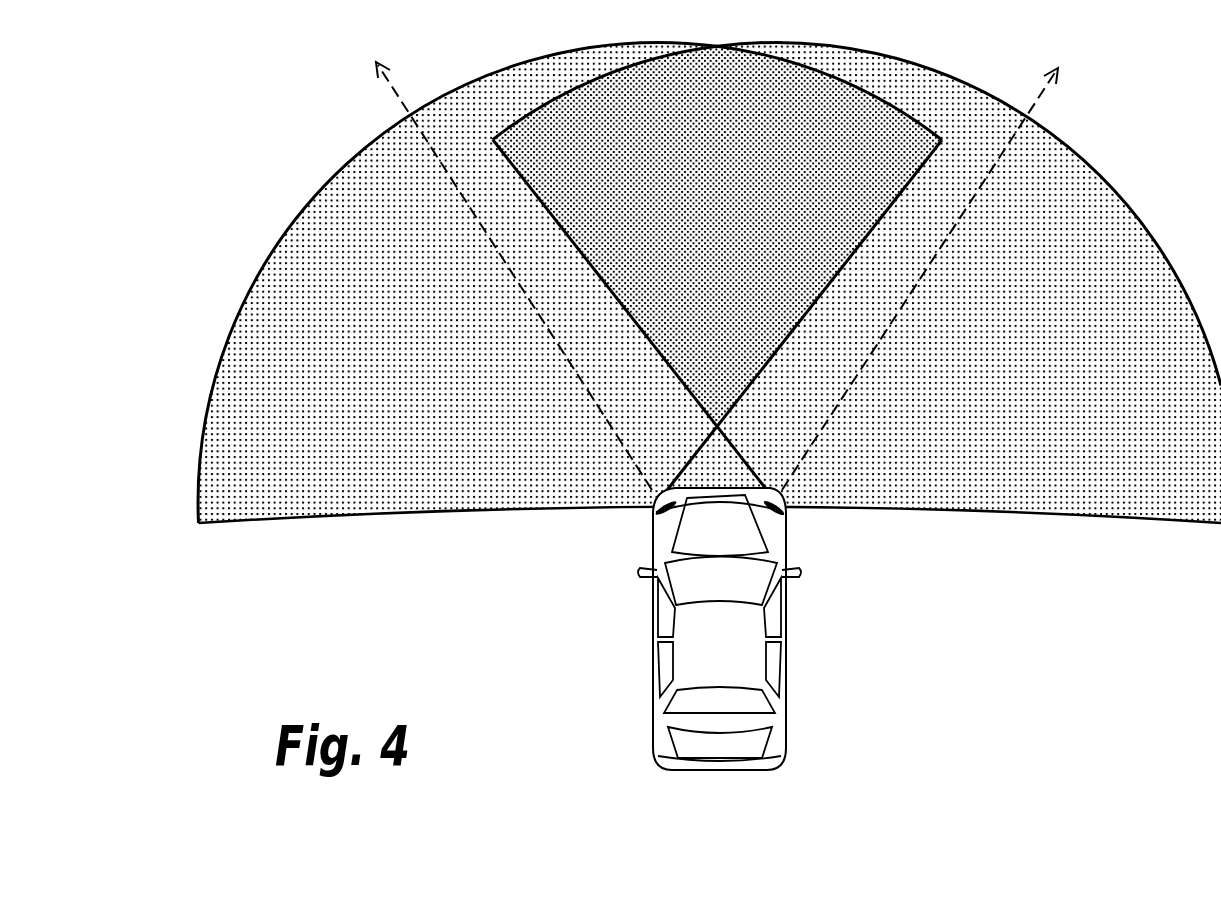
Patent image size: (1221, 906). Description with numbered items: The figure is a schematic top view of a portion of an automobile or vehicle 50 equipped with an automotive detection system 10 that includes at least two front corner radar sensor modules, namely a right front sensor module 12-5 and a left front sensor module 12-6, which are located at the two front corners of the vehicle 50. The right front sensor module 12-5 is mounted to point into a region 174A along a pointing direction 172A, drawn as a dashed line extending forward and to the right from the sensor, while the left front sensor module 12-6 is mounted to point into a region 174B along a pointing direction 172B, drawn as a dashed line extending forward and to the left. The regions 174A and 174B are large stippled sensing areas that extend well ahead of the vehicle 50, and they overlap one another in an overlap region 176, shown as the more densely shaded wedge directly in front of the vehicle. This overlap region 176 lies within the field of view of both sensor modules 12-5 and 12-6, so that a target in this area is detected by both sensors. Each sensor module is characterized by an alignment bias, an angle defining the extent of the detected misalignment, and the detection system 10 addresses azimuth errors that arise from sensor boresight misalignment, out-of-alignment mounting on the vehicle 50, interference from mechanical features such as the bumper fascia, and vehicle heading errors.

The automotive detection system 10 is at (788, 629).
The vehicle 50 is at (857, 590).
The right front sensor module 12-5 is at (785, 514).
The left front sensor module 12-6 is at (655, 514).
The pointing direction 172A is at (1048, 94).
The pointing direction 172B is at (395, 97).
The region 174A is at (1066, 379).
The region 174B is at (437, 369).
The overlap region 176 is at (735, 199).